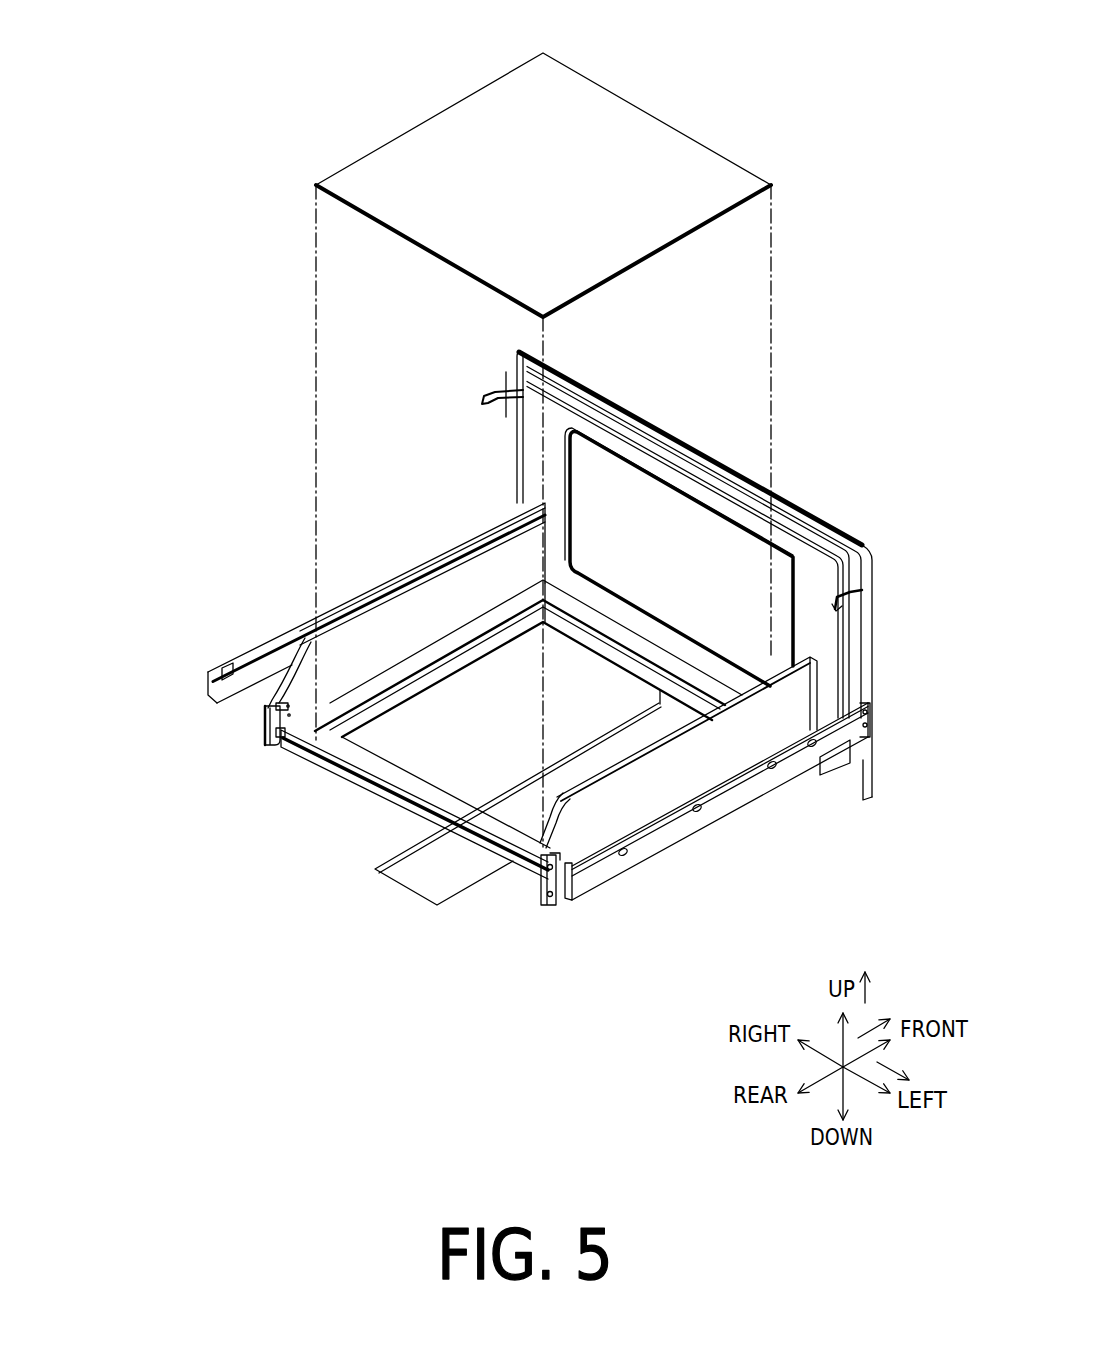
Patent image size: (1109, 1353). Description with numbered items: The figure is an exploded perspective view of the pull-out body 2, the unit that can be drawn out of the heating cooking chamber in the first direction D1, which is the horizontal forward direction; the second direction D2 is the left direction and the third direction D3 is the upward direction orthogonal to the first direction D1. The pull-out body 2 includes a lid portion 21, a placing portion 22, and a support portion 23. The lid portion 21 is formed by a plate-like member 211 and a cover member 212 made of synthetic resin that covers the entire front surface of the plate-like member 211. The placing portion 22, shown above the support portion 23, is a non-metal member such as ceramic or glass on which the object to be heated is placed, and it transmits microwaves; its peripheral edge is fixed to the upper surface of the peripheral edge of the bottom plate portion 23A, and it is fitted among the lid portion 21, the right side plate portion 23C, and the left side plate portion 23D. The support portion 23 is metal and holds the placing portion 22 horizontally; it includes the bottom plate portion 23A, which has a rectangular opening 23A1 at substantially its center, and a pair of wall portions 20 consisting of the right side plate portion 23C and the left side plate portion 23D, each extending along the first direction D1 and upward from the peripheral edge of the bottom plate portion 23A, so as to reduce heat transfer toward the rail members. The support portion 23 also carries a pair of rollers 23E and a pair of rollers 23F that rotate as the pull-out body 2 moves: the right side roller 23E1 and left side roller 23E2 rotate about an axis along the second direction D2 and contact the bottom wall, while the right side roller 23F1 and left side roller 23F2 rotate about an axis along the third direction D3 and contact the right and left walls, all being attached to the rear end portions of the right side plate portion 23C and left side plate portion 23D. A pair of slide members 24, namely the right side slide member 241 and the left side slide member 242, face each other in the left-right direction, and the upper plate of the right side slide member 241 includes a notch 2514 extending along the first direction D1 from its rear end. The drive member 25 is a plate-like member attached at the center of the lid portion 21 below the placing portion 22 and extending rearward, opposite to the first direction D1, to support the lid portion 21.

The pull-out body 2 is at (786, 191).
The placing portion 22 is at (672, 96).
The lid portion 21 is at (822, 512).
The plate-like member 211 is at (637, 460).
The cover member 212 is at (870, 606).
The support portion 23 is at (427, 618).
The bottom plate portion 23A is at (703, 705).
The rectangular opening 23A1 is at (504, 676).
The pair of wall portions 20 is at (494, 769).
The right side plate portion 23C is at (268, 704).
The left side plate portion 23D is at (643, 783).
The pair of rollers 23E is at (430, 847).
The right side roller 23E1 is at (273, 748).
The left side roller 23E2 is at (551, 899).
The pair of rollers 23F is at (328, 858).
The right side roller 23F1 is at (268, 735).
The left side roller 23F2 is at (552, 884).
The pair of slide members 24 is at (475, 759).
The right side slide member 241 is at (210, 699).
The left side slide member 242 is at (688, 823).
The notch 2514 is at (226, 657).
The drive member 25 is at (428, 878).
The first direction D1 is at (870, 1020).
The second direction D2 is at (895, 1072).
The third direction D3 is at (866, 980).